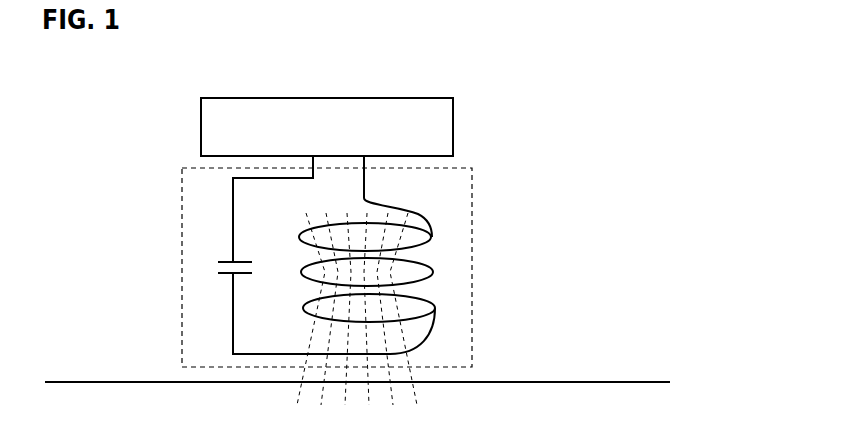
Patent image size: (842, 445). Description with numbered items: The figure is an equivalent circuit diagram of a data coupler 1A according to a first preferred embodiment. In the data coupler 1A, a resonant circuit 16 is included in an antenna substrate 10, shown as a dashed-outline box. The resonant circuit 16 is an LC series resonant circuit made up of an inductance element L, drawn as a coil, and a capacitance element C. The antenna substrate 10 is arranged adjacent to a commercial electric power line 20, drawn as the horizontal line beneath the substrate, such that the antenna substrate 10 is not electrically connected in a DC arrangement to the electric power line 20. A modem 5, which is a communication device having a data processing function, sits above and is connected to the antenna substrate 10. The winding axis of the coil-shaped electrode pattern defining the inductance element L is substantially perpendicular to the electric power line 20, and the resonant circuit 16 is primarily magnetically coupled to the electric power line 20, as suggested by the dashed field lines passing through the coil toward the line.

The data coupler 1A is at (120, 170).
The modem 5 is at (371, 98).
The antenna substrate 10 is at (473, 295).
The resonant circuit 16 is at (442, 208).
The commercial electric power line 20 is at (583, 382).